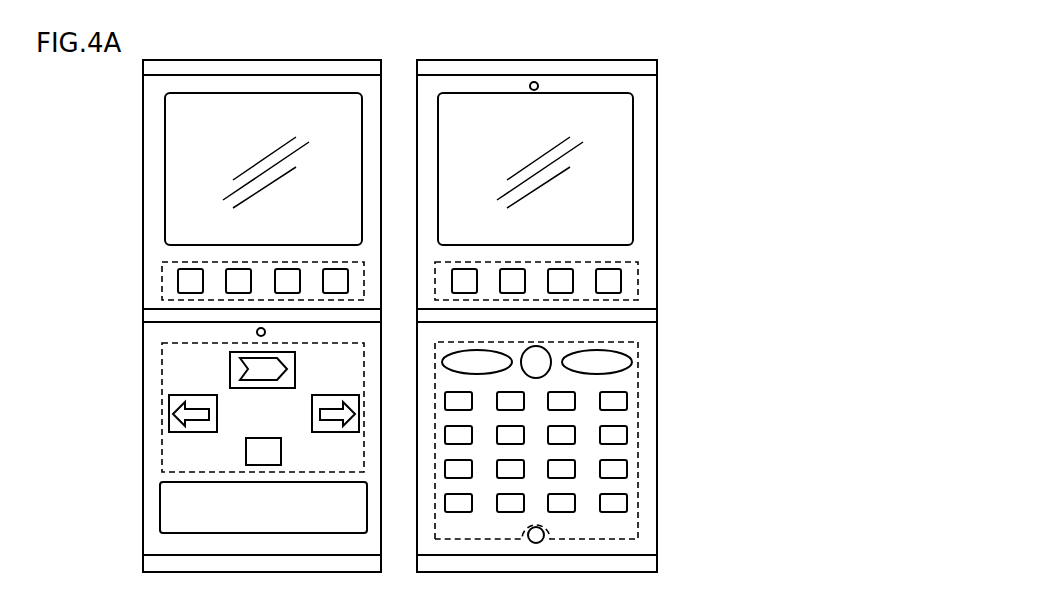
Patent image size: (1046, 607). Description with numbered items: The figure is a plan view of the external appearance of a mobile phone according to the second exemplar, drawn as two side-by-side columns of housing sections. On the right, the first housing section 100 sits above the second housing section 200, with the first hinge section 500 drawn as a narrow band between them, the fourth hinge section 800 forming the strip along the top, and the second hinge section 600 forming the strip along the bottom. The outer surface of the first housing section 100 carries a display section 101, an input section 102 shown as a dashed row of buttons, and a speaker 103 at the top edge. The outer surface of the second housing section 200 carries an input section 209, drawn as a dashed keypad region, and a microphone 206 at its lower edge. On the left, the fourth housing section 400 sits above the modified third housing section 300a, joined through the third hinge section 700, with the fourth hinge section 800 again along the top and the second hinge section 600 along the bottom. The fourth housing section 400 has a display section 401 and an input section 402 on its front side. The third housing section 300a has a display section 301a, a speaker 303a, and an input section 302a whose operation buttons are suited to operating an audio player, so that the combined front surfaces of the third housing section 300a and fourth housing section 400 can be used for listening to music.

The fourth hinge section 800 is at (371, 68).
The speaker 103 is at (534, 82).
The display section 401 is at (172, 133).
The fourth housing section 400 is at (143, 191).
The input section 402 is at (162, 282).
The third hinge section 700 is at (143, 315).
The speaker 303a is at (257, 332).
The third housing section 300a is at (143, 391).
The input section 302a is at (162, 452).
The display section 301a is at (160, 500).
The second hinge section 600 is at (143, 560).
The display section 101 is at (625, 137).
The first housing section 100 is at (657, 197).
The input section 102 is at (638, 280).
The first hinge section 500 is at (657, 317).
The second housing section 200 is at (657, 380).
The input section 209 is at (638, 455).
The microphone 206 is at (536, 543).